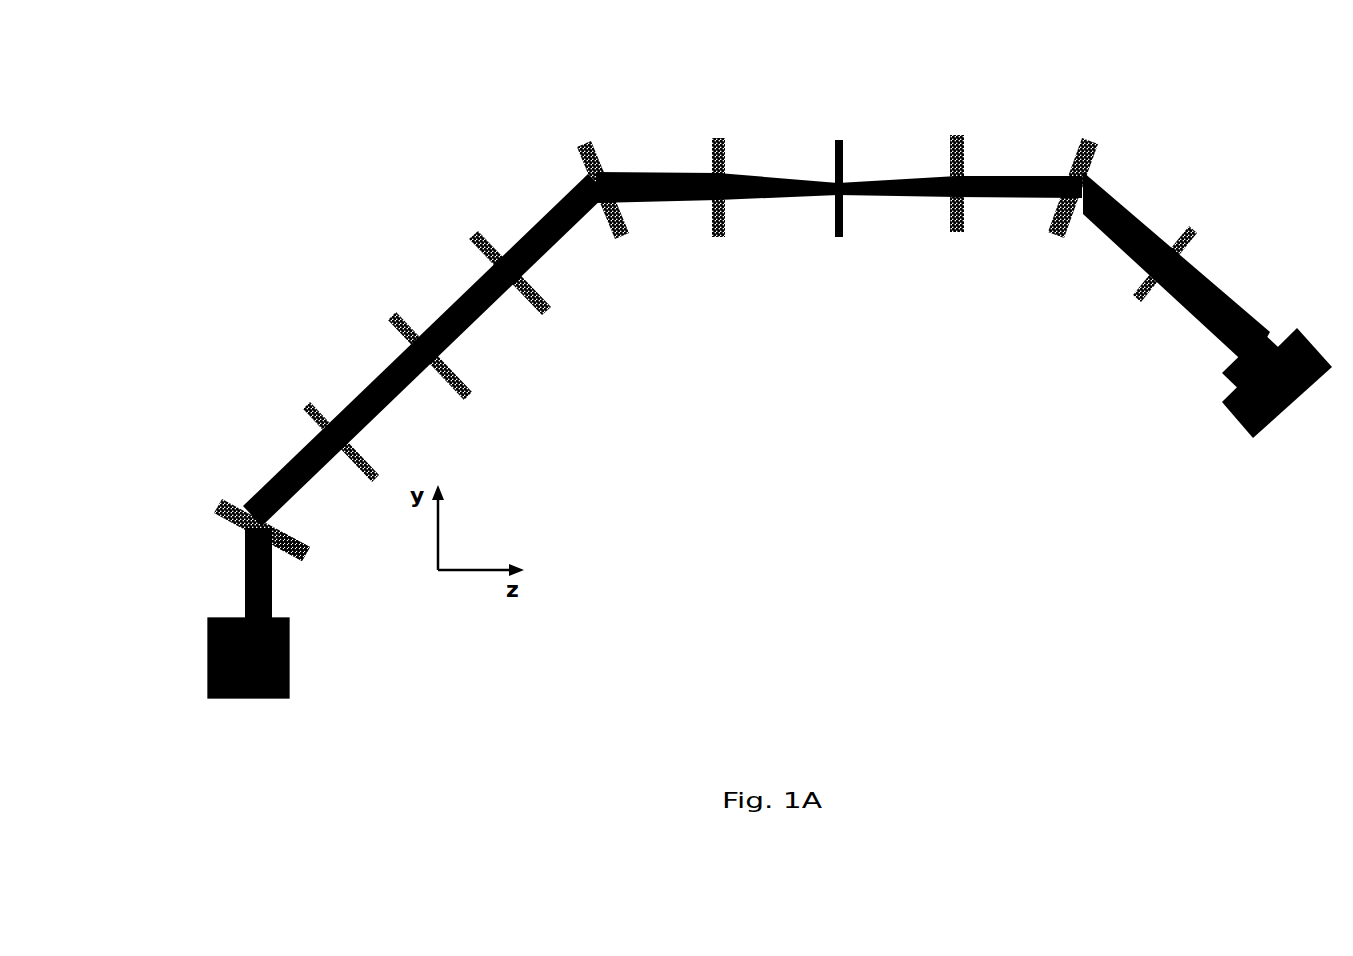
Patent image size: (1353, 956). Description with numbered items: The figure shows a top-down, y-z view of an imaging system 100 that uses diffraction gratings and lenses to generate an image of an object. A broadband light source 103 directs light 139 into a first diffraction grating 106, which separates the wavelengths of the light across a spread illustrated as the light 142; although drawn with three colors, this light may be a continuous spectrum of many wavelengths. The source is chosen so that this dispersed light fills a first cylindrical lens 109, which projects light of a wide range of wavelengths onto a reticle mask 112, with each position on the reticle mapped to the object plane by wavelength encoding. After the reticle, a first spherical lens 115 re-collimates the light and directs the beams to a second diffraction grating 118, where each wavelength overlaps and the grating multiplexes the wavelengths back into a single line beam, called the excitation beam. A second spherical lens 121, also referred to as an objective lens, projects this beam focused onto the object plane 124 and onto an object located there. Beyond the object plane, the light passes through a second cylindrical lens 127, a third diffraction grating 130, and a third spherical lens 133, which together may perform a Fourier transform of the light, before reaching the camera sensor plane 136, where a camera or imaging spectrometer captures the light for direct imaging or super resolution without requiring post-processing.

The imaging system 100 is at (305, 216).
The broadband light source 103 is at (290, 658).
The first diffraction grating 106 is at (302, 557).
The first cylindrical lens 109 is at (315, 408).
The reticle mask 112 is at (395, 317).
The first spherical lens 115 is at (537, 313).
The second diffraction grating 118 is at (615, 240).
The second spherical lens 121 is at (713, 240).
The object plane 124 is at (835, 138).
The second cylindrical lens 127 is at (962, 150).
The third diffraction grating 130 is at (1080, 150).
The third spherical lens 133 is at (1128, 308).
The camera sensor plane 136 is at (1240, 428).
The light 139 is at (243, 582).
The light 142 is at (263, 490).